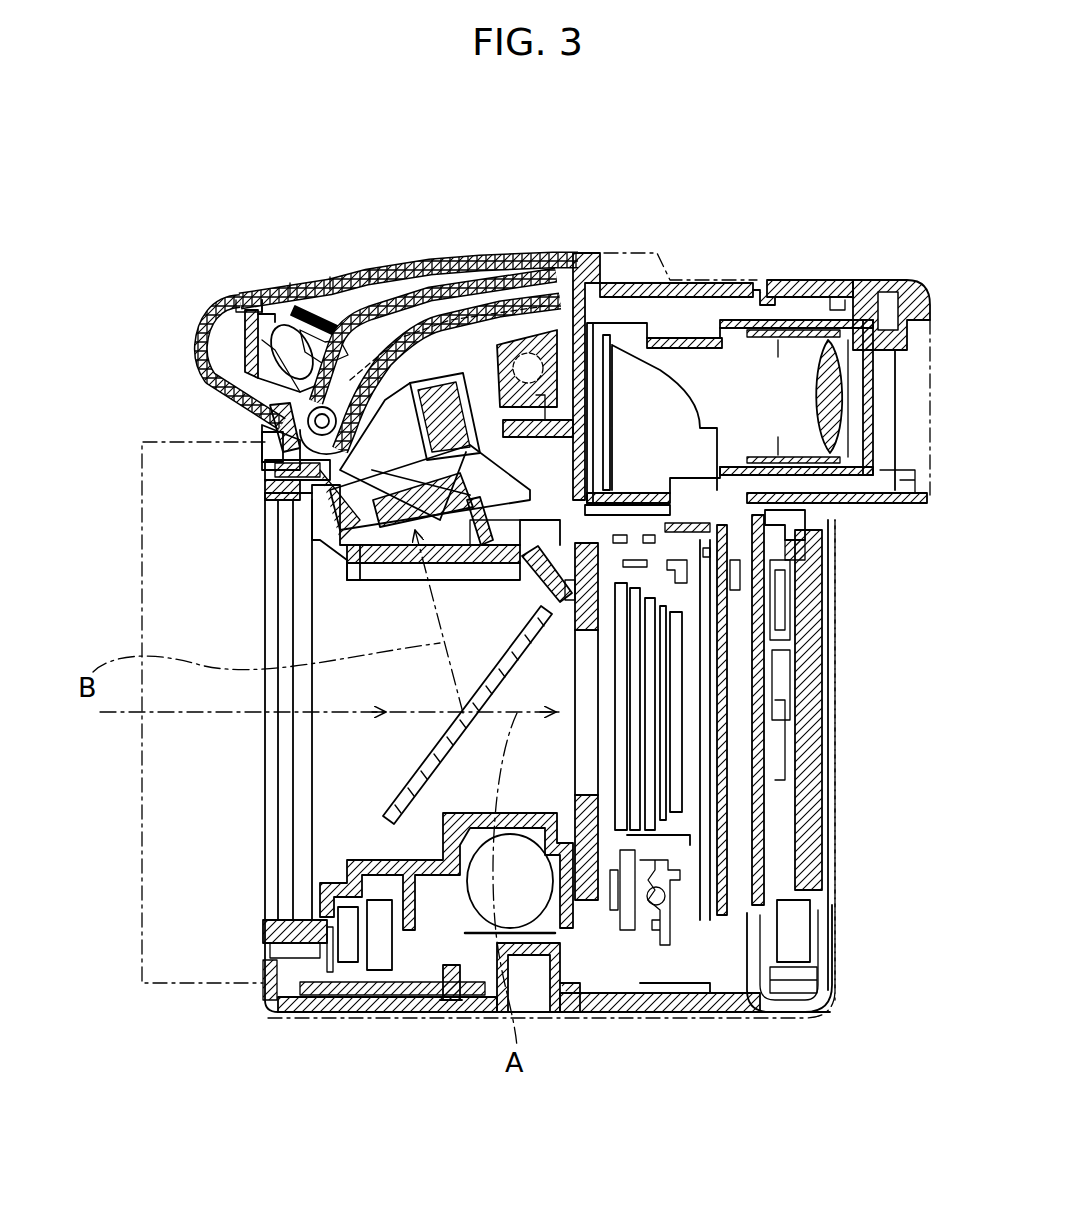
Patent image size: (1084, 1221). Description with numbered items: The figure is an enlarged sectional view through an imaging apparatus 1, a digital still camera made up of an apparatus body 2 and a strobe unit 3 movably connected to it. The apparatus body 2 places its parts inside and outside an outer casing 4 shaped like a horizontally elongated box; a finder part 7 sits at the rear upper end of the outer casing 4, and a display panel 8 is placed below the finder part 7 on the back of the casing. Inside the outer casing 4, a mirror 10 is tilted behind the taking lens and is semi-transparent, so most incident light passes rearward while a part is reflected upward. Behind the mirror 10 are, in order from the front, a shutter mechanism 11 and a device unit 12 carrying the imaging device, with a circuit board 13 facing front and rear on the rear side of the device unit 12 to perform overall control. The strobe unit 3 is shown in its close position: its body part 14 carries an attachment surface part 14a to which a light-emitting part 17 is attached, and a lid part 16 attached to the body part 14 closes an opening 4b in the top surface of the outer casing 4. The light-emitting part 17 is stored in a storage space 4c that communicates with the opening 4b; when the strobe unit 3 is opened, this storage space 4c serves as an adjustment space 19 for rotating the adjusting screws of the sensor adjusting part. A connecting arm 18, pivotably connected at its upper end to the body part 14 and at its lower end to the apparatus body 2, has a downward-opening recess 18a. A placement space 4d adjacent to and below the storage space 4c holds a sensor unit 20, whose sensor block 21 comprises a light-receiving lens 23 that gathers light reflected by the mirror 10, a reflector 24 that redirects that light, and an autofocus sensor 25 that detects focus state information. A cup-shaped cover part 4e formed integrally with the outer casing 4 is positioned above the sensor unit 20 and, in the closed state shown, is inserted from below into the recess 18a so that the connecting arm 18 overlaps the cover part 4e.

The imaging apparatus 1 is at (722, 118).
The apparatus body 2 is at (837, 617).
The strobe unit 3 is at (260, 295).
The outer casing 4 is at (583, 262).
The opening 4b is at (240, 306).
The storage space 4c is at (270, 395).
The placement space 4d is at (800, 533).
The cover part 4e is at (327, 283).
The finder part 7 is at (835, 290).
The display panel 8 is at (813, 703).
The mirror 10 is at (413, 770).
The shutter mechanism 11 is at (590, 888).
The device unit 12 is at (655, 735).
The circuit board 13 is at (757, 1013).
The body part 14 is at (240, 338).
The attachment surface part 14a is at (272, 412).
The lid part 16 is at (275, 288).
The light-emitting part 17 is at (292, 383).
The connecting arm 18 is at (402, 343).
The recess 18a is at (403, 372).
The adjustment space 19 is at (197, 407).
The sensor unit 20 is at (525, 300).
The sensor block 21 is at (485, 400).
The light-receiving lens 23 is at (400, 515).
The reflector 24 is at (340, 490).
The autofocus sensor 25 is at (450, 392).